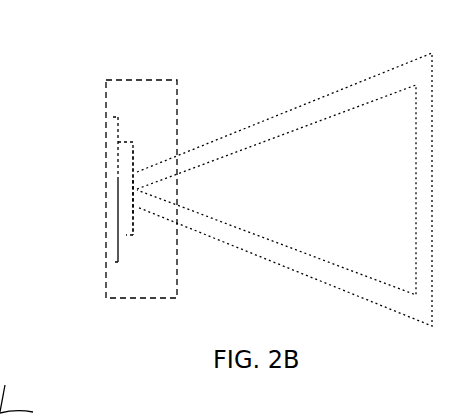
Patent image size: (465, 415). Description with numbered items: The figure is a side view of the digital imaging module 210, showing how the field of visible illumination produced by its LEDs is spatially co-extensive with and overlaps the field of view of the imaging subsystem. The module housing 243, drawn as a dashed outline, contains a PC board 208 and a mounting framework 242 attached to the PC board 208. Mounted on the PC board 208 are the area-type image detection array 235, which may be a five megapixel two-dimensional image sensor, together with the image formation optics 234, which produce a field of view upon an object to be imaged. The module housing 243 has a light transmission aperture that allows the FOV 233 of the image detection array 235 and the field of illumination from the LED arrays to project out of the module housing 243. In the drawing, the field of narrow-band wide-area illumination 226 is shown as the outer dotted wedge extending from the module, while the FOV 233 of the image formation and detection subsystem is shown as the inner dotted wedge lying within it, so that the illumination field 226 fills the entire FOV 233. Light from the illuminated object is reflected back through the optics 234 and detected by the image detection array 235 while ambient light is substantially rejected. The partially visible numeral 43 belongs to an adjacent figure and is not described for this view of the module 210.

The module housing 243 is at (141, 79).
The digital imaging module 210 is at (107, 197).
The PC board 208 is at (115, 263).
The image detection array 235 is at (133, 237).
The image formation optics 234 is at (137, 212).
The field of narrow-band wide-area illumination 226 is at (326, 98).
The field of view 233 is at (262, 140).
The mounting framework 242 is at (96, 414).
The scanner component 43 is at (11, 387).